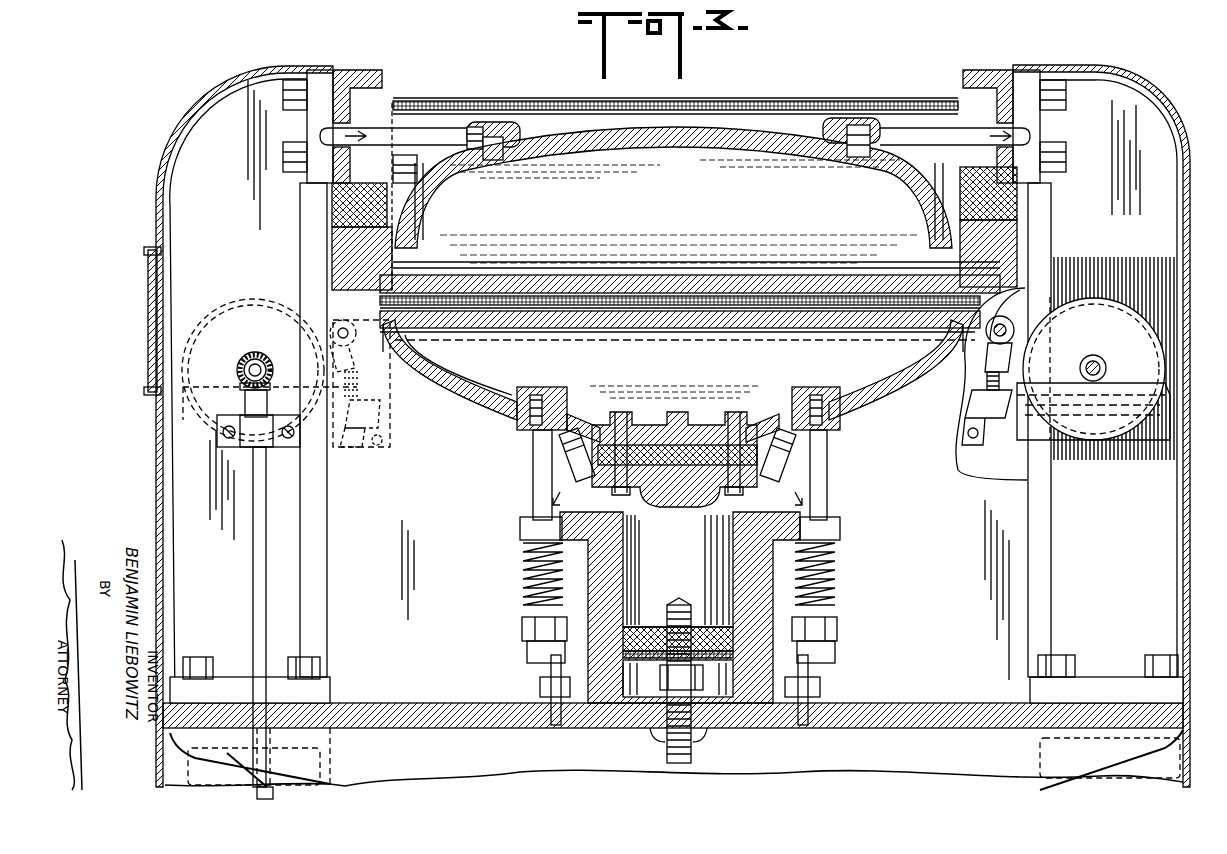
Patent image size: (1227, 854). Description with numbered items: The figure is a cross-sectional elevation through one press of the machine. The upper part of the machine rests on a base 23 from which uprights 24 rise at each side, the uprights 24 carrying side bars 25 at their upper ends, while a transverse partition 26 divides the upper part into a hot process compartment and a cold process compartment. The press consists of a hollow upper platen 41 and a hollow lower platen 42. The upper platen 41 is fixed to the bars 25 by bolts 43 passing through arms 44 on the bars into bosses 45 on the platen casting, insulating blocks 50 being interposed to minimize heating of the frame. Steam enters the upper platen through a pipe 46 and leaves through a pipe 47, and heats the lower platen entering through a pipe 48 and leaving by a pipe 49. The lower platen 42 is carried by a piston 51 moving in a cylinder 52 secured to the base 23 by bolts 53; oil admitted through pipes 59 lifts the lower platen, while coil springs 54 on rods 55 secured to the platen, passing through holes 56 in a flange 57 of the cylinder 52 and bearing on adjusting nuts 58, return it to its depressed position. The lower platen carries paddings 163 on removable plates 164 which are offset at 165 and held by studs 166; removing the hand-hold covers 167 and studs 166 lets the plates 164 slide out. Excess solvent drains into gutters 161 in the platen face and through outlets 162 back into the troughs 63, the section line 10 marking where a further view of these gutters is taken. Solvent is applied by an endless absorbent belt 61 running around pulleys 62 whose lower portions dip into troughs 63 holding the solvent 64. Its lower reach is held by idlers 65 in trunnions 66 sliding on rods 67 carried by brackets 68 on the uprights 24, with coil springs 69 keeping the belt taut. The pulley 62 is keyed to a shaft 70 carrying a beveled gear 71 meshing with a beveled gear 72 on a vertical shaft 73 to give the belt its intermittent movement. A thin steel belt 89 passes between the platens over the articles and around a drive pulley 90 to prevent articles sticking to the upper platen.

The section line 10 is at (208, 300).
The base 23 is at (365, 712).
The uprights 24 is at (328, 512).
The side bars 25 is at (368, 72).
The transverse partition 26 is at (962, 505).
The upper platen 41 is at (790, 292).
The lower platen 42 is at (780, 338).
The bolts 43 is at (410, 155).
The arms 44 is at (405, 175).
The bosses 45 is at (423, 235).
The pipe 46 is at (398, 128).
The pipe 47 is at (893, 138).
The pipe 48 is at (562, 452).
The pipe 49 is at (795, 462).
The insulating blocks 50 is at (360, 205).
The piston 51 is at (668, 500).
The cylinder 52 is at (590, 560).
The bolts 53 is at (555, 690).
The coil springs 54 is at (528, 600).
The rods 55 is at (828, 500).
The holes 56 is at (842, 527).
The flange 57 is at (522, 528).
The nuts 58 is at (838, 636).
The pipes 59 is at (693, 745).
The absorbent belt 61 is at (285, 302).
The pulleys 62 is at (242, 300).
The troughs 63 is at (400, 400).
The solvent 64 is at (1128, 373).
The idlers 65 is at (1008, 320).
The trunnions 66 is at (337, 352).
The rods 67 is at (345, 382).
The brackets 68 is at (1000, 430).
The coil springs 69 is at (995, 384).
The shaft 70 is at (262, 358).
The beveled gear 71 is at (250, 366).
The beveled gear 72 is at (238, 398).
The vertical shaft 73 is at (256, 512).
The thin steel belt 89 is at (770, 99).
The drive pulley 90 is at (835, 99).
The gutters 161 is at (538, 342).
The outlets 162 is at (440, 393).
The paddings 163 is at (665, 318).
The plates 164 is at (715, 323).
The offset 165 is at (422, 352).
The studs 166 is at (395, 276).
The hand-hold covers 167 is at (150, 310).